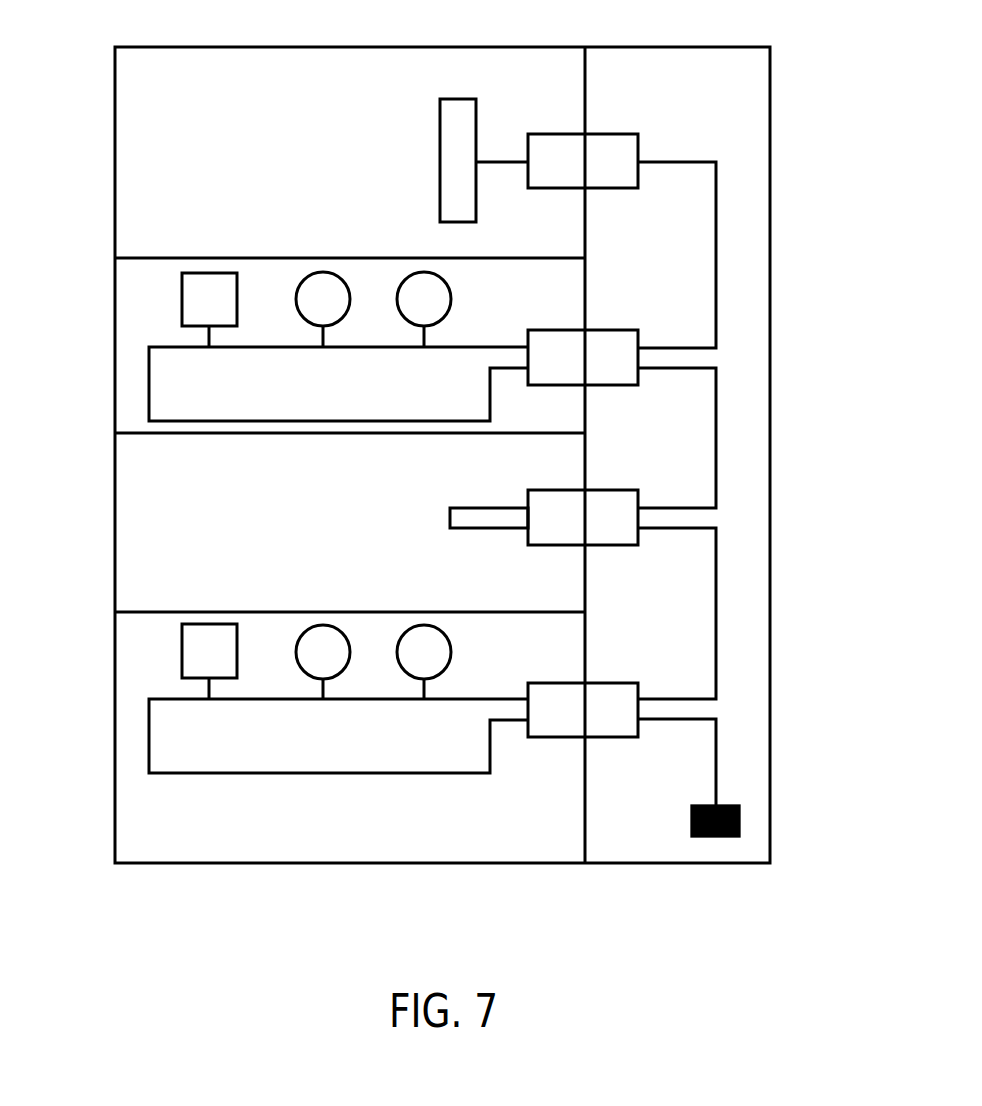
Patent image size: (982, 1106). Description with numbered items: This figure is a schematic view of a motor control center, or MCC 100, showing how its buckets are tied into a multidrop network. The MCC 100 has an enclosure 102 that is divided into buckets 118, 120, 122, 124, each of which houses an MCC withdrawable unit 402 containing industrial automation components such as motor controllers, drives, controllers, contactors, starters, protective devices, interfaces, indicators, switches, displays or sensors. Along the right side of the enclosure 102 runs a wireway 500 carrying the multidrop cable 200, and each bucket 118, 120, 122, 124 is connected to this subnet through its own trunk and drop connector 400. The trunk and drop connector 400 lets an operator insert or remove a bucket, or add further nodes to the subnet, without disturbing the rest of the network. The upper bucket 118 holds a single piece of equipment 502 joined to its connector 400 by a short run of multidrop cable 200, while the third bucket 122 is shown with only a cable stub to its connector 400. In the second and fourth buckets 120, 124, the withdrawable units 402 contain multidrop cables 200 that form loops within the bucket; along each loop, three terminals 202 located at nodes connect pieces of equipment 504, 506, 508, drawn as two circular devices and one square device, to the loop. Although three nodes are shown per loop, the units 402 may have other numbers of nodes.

The MCC 100 is at (350, 47).
The enclosure 102 is at (115, 143).
The bucket 118 is at (277, 187).
The bucket 120 is at (411, 387).
The bucket 122 is at (267, 537).
The bucket 124 is at (282, 835).
The multidrop cable 200 is at (500, 163).
The terminal 202 is at (209, 347).
The trunk and drop connector 400 is at (608, 134).
The MCC withdrawable unit 402 is at (304, 232).
The wireway 500 is at (654, 793).
The equipment 502 is at (440, 156).
The equipment 504 is at (451, 294).
The equipment 506 is at (323, 273).
The equipment 508 is at (209, 273).